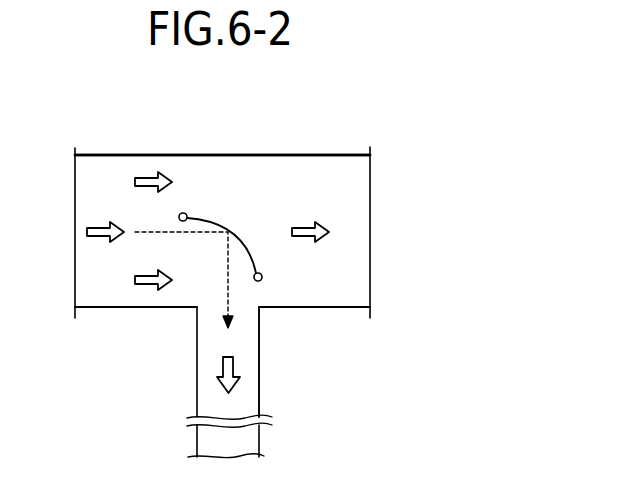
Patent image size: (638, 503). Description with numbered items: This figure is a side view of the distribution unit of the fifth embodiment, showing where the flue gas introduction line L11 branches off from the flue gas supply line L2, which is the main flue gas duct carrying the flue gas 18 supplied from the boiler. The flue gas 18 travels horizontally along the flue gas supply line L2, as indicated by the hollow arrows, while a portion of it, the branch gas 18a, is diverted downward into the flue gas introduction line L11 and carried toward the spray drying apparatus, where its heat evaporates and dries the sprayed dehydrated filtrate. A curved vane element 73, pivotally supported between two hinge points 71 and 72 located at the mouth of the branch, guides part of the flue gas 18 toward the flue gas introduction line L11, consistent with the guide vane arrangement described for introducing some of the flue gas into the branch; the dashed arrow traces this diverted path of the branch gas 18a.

The flue gas 18 is at (98, 221).
The branch gas 18a is at (220, 372).
The hinge of flap 71 is at (183, 213).
The second hinge of flap 72 is at (261, 281).
The flap member 73 is at (226, 228).
The flue gas supply line L2 is at (345, 155).
The flue gas introduction line L11 is at (259, 399).